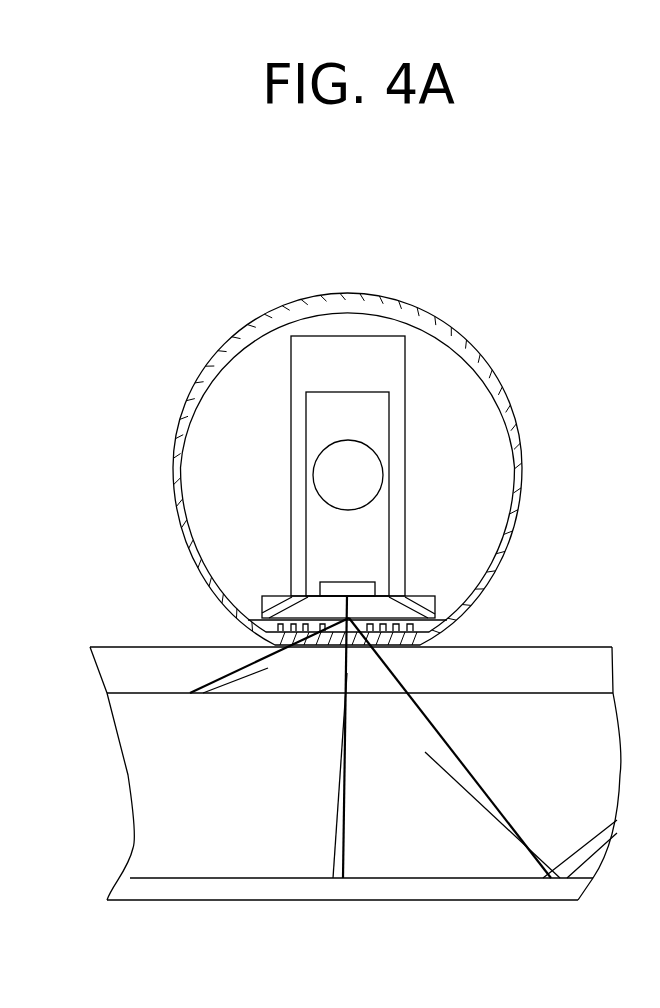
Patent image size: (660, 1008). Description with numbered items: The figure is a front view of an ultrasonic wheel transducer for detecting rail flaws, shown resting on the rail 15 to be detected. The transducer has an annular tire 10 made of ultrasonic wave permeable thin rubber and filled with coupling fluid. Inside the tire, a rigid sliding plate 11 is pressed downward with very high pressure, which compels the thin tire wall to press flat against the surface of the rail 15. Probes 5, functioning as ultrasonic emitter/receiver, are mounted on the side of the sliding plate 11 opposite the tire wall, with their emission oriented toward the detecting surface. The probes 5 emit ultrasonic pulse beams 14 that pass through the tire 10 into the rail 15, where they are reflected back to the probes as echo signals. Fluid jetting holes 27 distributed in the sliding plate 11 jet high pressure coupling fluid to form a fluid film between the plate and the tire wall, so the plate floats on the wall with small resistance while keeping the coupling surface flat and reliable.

The tire 10 is at (455, 330).
The probes 5 is at (437, 600).
The sliding plate 11 is at (447, 634).
The fluid jetting holes 27 is at (260, 627).
The ultrasonic pulse beams 14 is at (262, 668).
The rail 15 is at (580, 900).